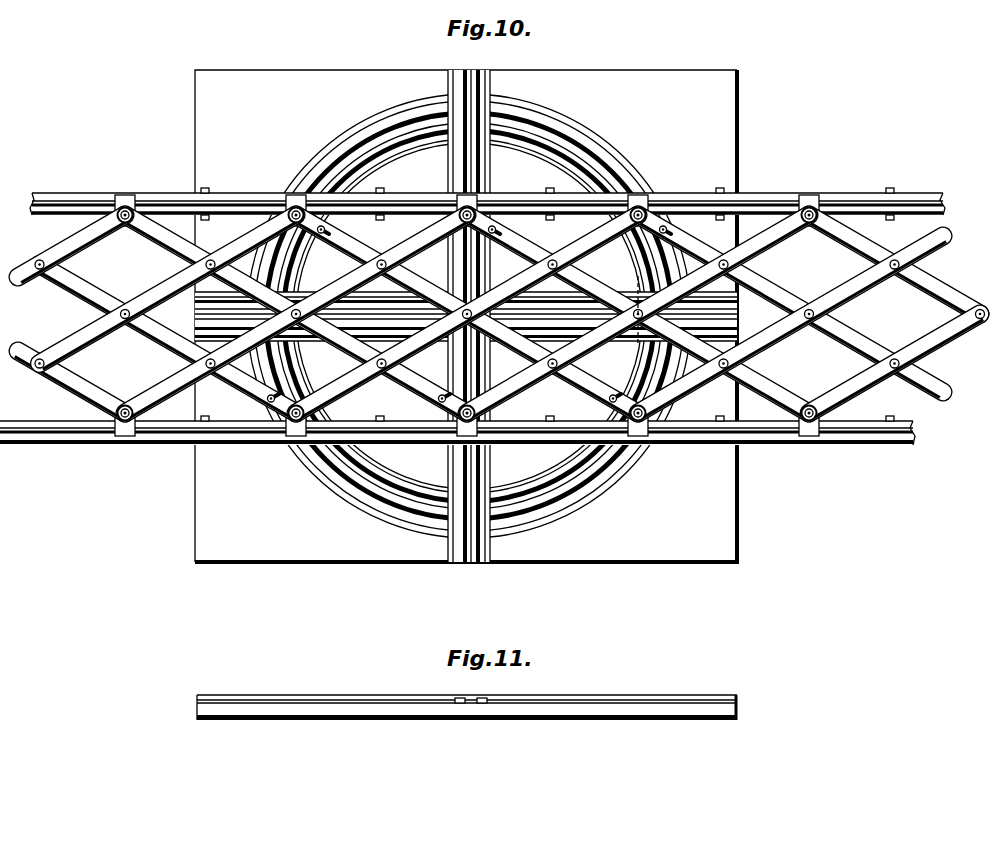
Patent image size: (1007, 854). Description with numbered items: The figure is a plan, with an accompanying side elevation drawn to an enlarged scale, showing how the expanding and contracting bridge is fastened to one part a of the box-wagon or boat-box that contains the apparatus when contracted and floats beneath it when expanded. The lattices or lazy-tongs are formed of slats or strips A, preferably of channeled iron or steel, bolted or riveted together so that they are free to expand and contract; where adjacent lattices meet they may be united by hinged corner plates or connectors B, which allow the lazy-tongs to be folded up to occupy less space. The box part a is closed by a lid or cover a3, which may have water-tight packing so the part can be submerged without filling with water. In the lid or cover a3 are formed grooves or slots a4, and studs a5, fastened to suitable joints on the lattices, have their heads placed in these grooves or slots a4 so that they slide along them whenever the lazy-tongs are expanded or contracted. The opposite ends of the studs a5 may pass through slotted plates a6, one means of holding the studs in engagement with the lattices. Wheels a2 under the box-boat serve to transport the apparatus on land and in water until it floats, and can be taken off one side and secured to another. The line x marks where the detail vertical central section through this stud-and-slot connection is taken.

In FIG. 10, the box-wagon part a is at (296, 405).
In FIG. 10, the wheels a2 is at (356, 150).
In FIG. 11, the wheels a2 is at (470, 696).
In FIG. 10, the lid or cover a3 is at (466, 316).
In FIG. 11, the lid or cover a3 is at (590, 716).
In FIG. 10, the grooves or slots a4 is at (556, 500).
In FIG. 10, the studs a5 is at (640, 223).
In FIG. 10, the slotted plates a6 is at (298, 226).
In FIG. 10, the section line x is at (635, 318).
In FIG. 10, the slats or strips A is at (857, 198).
In FIG. 10, the hinged corner plates or connectors B is at (126, 207).